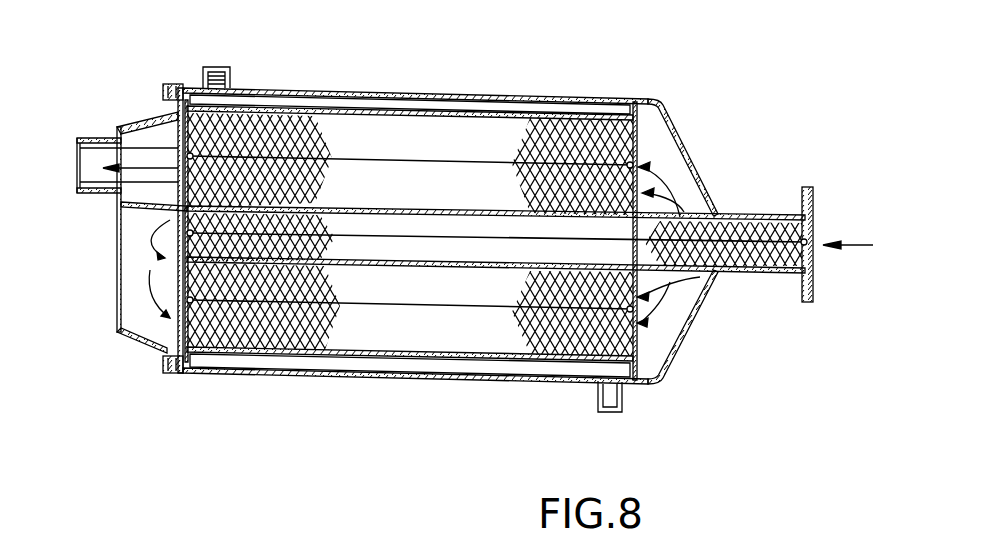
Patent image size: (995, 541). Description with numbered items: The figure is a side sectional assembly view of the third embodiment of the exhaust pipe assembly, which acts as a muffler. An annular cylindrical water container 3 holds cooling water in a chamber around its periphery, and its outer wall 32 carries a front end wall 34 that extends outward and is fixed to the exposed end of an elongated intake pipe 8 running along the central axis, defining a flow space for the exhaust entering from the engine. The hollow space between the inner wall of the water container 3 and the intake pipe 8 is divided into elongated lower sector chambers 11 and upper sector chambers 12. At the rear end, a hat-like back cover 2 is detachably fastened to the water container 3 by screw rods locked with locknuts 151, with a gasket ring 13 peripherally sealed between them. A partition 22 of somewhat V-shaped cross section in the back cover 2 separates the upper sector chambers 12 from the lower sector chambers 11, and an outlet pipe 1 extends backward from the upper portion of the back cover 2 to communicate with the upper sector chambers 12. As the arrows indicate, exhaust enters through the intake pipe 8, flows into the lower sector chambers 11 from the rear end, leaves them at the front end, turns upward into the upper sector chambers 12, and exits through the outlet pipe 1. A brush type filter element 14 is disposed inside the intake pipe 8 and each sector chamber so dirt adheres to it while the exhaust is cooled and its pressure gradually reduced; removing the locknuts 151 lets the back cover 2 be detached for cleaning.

The outlet pipe 1 is at (93, 138).
The back cover 2 is at (143, 115).
The water container 3 is at (457, 212).
The intake pipe 8 is at (781, 276).
The lower sector chambers 11 is at (488, 343).
The upper sector chambers 12 is at (347, 140).
The gasket ring 13 is at (188, 80).
The brush type filter element 14 is at (255, 342).
The partition 22 is at (143, 207).
The outer wall 32 is at (571, 98).
The front end wall 34 is at (693, 150).
The locknuts 151 is at (165, 374).